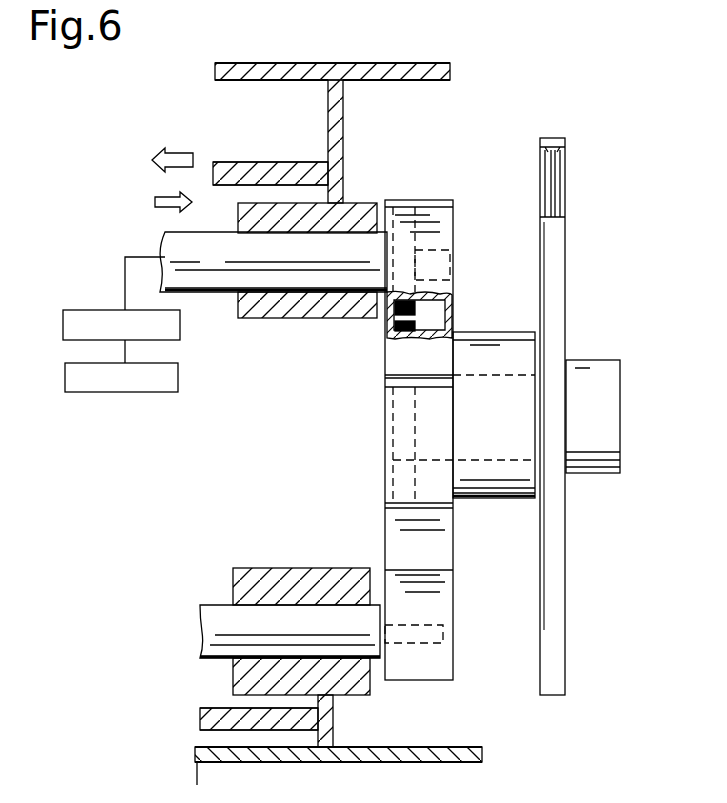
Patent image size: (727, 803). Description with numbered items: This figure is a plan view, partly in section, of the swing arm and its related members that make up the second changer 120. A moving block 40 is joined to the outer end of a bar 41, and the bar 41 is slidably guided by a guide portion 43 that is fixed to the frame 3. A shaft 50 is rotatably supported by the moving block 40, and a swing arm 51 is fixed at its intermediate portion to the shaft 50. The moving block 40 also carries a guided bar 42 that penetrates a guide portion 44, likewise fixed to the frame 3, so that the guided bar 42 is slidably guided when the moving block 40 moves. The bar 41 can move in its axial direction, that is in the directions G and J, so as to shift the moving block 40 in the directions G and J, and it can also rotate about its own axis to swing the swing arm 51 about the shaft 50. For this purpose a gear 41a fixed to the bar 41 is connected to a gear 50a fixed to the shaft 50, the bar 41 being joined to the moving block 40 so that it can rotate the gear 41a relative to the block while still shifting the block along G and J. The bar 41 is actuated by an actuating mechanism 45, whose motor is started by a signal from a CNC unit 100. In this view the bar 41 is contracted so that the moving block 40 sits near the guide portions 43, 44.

The frame 3 is at (431, 63).
The direction J is at (188, 150).
The direction G is at (155, 194).
The moving block 40 is at (453, 660).
The bar 41 is at (160, 232).
The gear 41a is at (392, 320).
The guided bar 42 is at (220, 605).
The guide portion 43 is at (238, 318).
The guide portion 44 is at (268, 568).
The actuating mechanism 45 is at (97, 310).
The shaft 50 is at (535, 455).
The gear 50a is at (392, 332).
The swing arm 51 is at (567, 180).
The CNC unit 100 is at (160, 392).
The second changer 120 is at (594, 357).